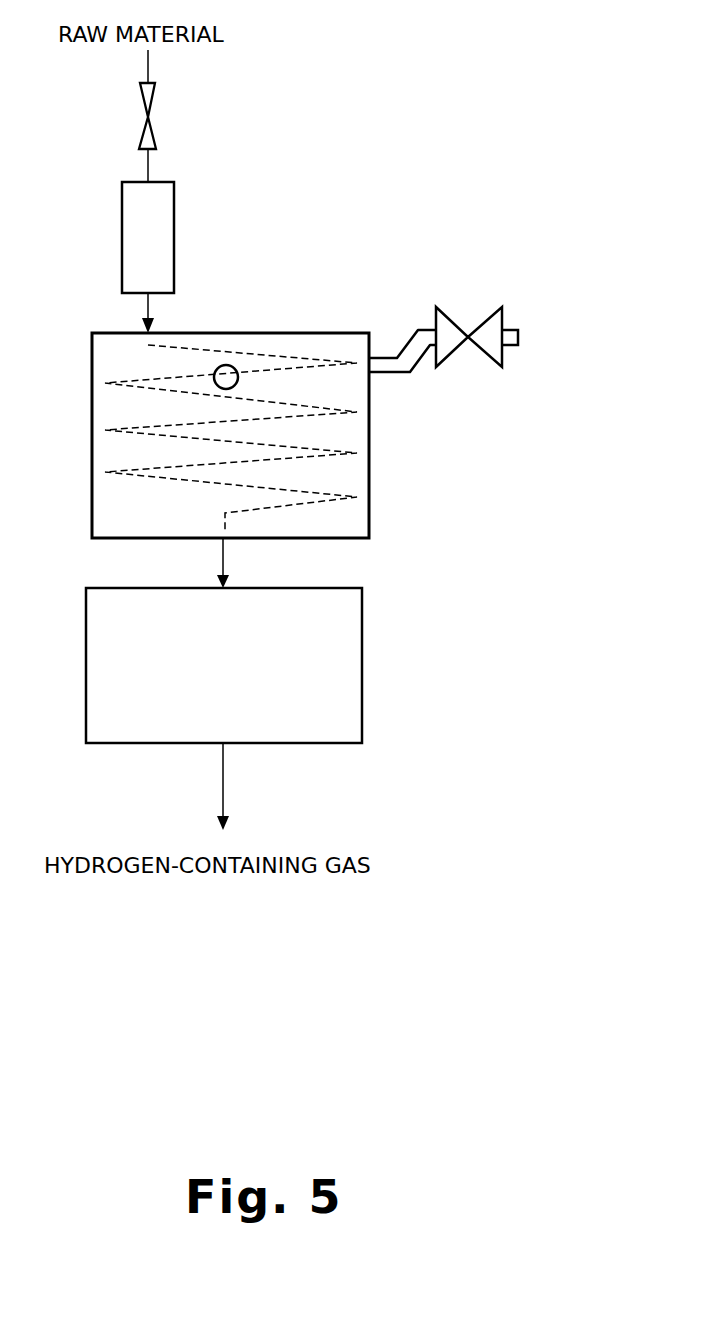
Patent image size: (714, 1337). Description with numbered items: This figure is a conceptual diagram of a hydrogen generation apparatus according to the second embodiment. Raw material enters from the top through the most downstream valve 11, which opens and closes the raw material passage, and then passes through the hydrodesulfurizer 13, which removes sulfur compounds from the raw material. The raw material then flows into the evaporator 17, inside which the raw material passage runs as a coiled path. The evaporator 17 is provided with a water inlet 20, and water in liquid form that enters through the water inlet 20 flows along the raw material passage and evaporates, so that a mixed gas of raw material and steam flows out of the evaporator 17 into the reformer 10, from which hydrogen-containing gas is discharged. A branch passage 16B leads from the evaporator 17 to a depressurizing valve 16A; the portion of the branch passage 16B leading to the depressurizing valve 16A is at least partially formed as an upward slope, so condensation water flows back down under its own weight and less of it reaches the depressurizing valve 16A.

The reformer 10 is at (224, 665).
The most downstream valve 11 is at (153, 93).
The hydrodesulfurizer 13 is at (148, 237).
The depressurizing valve 16A is at (502, 312).
The branch passage 16B is at (415, 365).
The evaporator 17 is at (369, 505).
The water inlet 20 is at (234, 365).